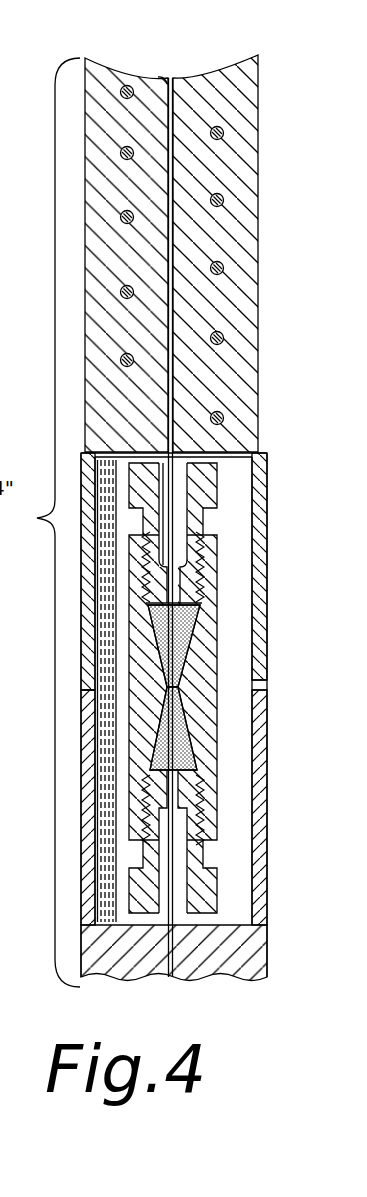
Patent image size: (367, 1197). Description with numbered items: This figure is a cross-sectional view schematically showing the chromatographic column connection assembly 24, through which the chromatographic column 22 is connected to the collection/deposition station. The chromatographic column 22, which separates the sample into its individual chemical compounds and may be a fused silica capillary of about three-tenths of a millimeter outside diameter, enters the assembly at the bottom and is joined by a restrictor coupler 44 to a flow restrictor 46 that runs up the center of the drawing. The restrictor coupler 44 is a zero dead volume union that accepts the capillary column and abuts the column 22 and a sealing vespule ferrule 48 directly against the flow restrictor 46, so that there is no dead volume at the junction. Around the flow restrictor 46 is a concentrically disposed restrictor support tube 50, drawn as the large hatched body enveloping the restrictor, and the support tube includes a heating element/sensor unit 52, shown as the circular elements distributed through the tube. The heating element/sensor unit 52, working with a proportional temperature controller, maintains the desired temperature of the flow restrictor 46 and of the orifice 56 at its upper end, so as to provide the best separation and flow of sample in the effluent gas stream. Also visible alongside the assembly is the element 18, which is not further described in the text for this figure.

The electrical cable 18 is at (58, 681).
The chromatographic column 22 is at (197, 900).
The connection assembly 24 is at (137, 522).
The restrictor coupler 44 is at (207, 633).
The flow restrictor 46 is at (174, 118).
The sealing vespule ferrule 48 is at (183, 758).
The restrictor support tube 50 is at (223, 368).
The heating element/sensor unit 52 is at (224, 268).
The orifice 56 is at (165, 82).